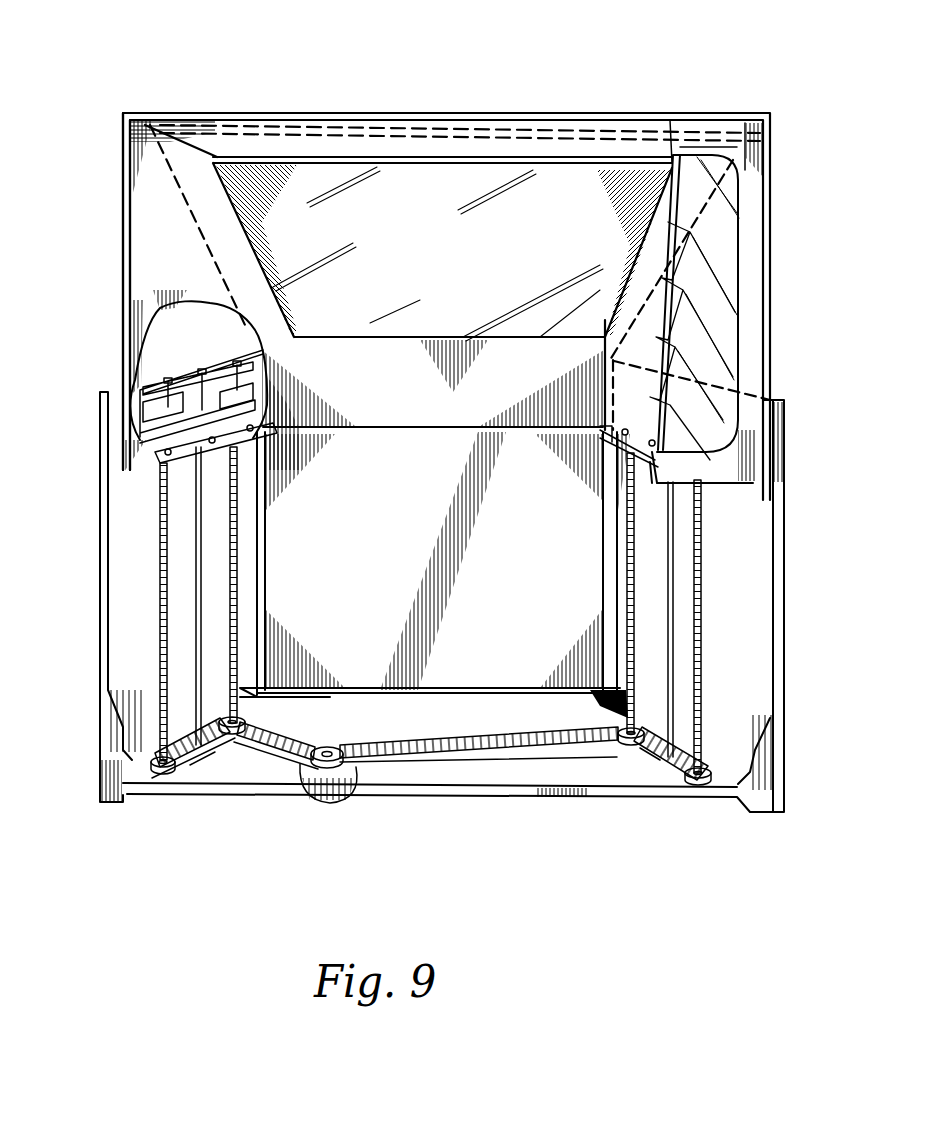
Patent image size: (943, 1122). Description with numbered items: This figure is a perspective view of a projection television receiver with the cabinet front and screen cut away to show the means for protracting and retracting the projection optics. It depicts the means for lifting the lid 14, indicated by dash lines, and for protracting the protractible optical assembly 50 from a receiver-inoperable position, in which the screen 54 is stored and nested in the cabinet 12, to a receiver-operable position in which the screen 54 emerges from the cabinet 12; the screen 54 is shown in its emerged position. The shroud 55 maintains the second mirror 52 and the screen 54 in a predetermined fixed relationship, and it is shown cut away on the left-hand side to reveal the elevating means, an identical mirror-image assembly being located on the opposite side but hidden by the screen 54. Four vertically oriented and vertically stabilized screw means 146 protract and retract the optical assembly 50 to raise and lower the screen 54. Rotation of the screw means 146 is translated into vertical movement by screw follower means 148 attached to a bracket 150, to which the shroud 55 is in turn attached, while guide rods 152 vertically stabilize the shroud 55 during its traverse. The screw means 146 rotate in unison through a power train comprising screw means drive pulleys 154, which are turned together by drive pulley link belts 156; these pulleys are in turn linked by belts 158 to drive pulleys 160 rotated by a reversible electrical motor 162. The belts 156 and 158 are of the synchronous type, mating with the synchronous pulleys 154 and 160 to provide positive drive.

The cabinet 12 is at (483, 602).
The lid 14 is at (460, 92).
The protractible optical assembly 50 is at (492, 306).
The second mirror 52 is at (442, 235).
The screen 54 is at (738, 319).
The shroud 55 is at (81, 291).
The screw means 146 is at (437, 610).
The screw follower means 148 is at (141, 366).
The bracket 150 is at (142, 446).
The guide rods 152 is at (441, 602).
The screw means drive pulleys 154 is at (367, 776).
The drive pulley link belts 156 is at (418, 812).
The belts 158 is at (430, 797).
The drive pulleys 160 is at (331, 809).
The reversible electrical motor 162 is at (358, 818).